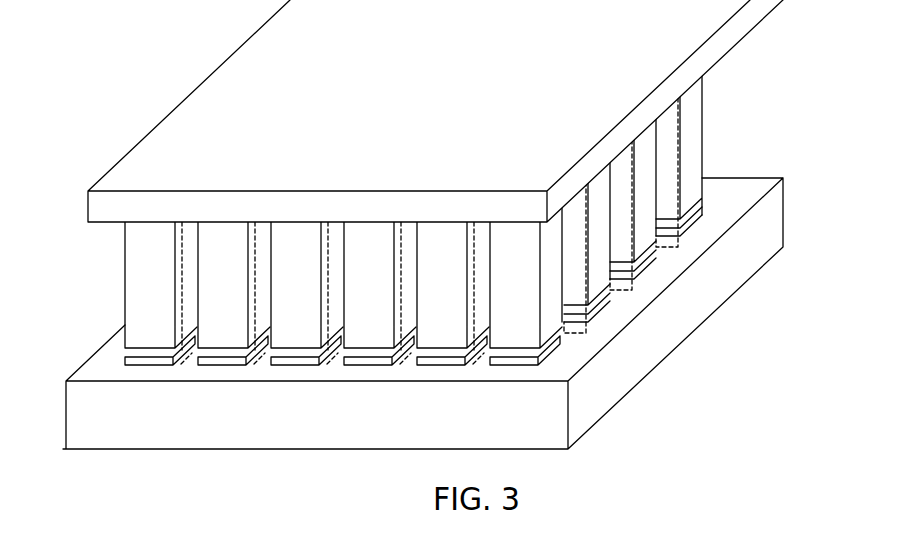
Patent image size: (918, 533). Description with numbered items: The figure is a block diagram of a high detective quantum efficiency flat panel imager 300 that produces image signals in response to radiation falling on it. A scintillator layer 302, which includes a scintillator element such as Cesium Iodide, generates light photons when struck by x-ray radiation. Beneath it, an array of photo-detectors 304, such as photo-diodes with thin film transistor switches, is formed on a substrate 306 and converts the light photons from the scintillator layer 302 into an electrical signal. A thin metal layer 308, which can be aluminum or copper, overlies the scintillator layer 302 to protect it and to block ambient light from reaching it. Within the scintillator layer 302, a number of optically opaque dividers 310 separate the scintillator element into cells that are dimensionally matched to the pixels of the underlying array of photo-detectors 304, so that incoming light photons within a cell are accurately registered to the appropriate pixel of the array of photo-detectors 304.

The imager 300 is at (200, 50).
The scintillator layer 302 is at (315, 296).
The array of photo-detectors 304 is at (128, 355).
The substrate 306 is at (347, 430).
The thin metal layer 308 is at (470, 80).
The optically opaque dividers 310 is at (679, 241).